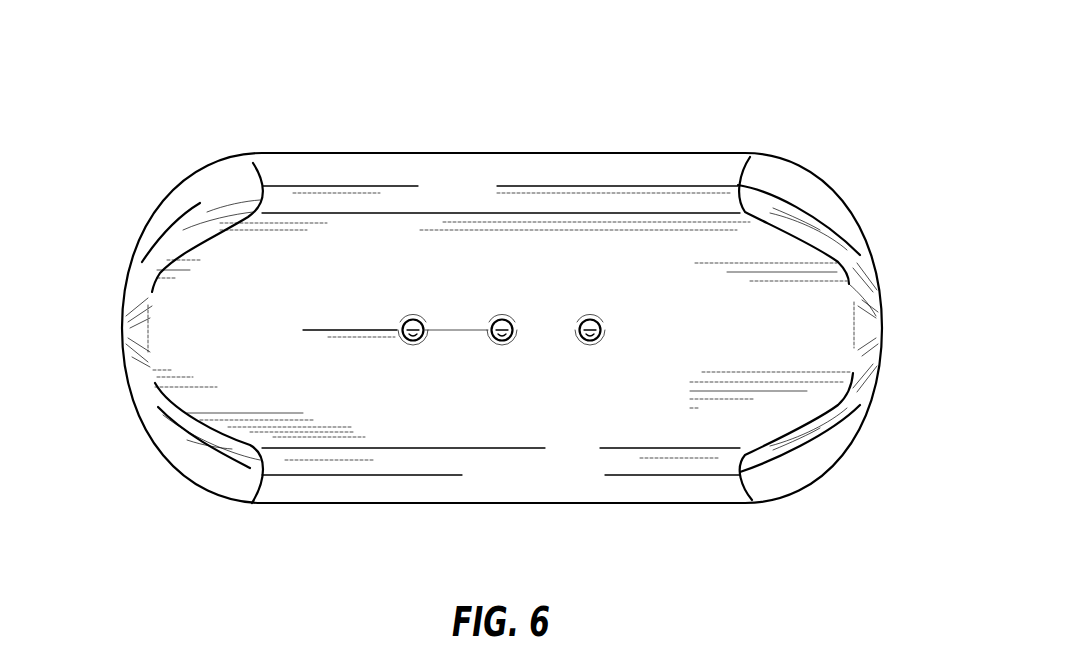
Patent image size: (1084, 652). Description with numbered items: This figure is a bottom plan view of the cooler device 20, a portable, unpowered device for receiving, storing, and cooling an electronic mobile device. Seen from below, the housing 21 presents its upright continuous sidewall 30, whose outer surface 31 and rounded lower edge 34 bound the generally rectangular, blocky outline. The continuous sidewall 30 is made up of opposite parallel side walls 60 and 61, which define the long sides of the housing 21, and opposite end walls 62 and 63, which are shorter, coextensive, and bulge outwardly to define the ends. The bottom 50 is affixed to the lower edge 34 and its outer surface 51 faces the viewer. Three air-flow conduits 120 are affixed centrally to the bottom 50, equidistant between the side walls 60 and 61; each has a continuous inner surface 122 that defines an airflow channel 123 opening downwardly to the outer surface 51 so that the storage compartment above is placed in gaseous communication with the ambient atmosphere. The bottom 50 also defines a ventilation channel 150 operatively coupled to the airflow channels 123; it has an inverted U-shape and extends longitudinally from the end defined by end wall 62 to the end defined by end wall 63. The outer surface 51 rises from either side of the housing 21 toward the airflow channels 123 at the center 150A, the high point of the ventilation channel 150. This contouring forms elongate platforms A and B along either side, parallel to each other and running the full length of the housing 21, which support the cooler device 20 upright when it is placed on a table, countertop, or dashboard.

The cooler device 20 is at (809, 137).
The housing 21 is at (848, 207).
The continuous sidewall 30 is at (870, 252).
The outer surface 31 is at (784, 489).
The lower edge 34 is at (285, 510).
The bottom 50 is at (318, 170).
The outer surface 51 is at (357, 232).
The side wall 60 is at (668, 505).
The side wall 61 is at (472, 155).
The end wall 62 is at (130, 330).
The end wall 63 is at (860, 340).
The air-flow conduit 120 is at (405, 318).
The continuous inner surface 122 is at (413, 341).
The airflow channel 123 is at (418, 318).
The ventilation channel 150 is at (528, 326).
The center of ventilation channel 150A is at (335, 335).
The elongate platform A is at (556, 490).
The elongate platform B is at (592, 170).